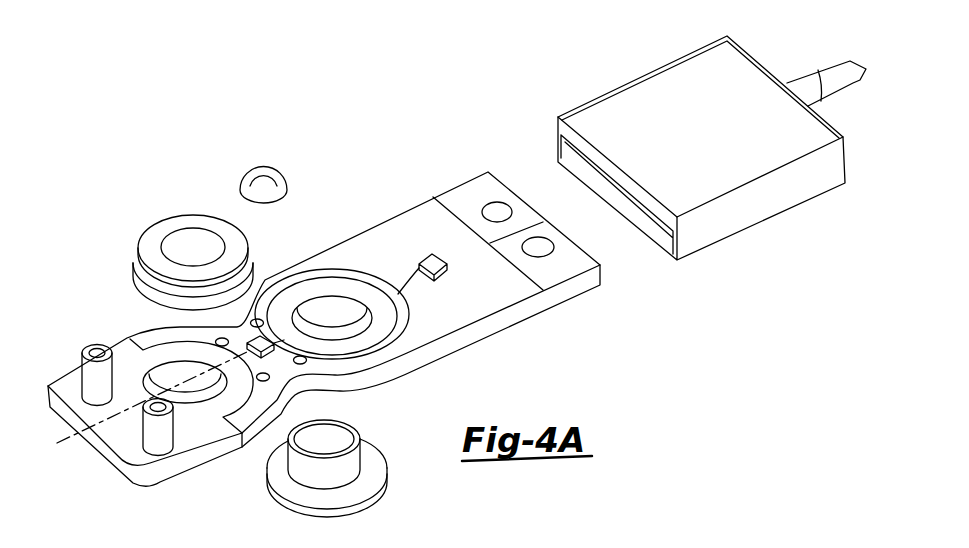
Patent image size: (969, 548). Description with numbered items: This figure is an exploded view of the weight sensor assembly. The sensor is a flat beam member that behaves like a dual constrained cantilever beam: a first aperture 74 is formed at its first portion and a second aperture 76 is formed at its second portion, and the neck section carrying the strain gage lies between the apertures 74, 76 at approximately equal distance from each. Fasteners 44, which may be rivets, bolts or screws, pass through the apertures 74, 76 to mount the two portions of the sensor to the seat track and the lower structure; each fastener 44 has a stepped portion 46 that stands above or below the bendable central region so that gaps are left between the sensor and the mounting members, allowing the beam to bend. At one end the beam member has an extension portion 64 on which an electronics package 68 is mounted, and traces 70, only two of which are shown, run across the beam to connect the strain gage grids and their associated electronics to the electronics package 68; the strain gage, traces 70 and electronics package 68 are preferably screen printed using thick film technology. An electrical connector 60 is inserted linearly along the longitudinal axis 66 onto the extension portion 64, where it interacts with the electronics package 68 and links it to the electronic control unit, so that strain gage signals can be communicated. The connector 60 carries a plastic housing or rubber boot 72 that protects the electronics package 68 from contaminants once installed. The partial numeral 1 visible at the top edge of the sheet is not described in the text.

The optical device 1 is at (212, 4).
The fasteners 44 is at (200, 213).
The stepped portions 46 is at (147, 285).
The electrical connector 60 is at (712, 130).
The extension portion 64 is at (418, 227).
The longitudinal axis 66 is at (72, 452).
The electronics package 68 is at (447, 267).
The traces 70 is at (357, 270).
The plastic housing or rubber boot 72 is at (740, 88).
The first aperture 74 is at (190, 398).
The second aperture 76 is at (331, 327).